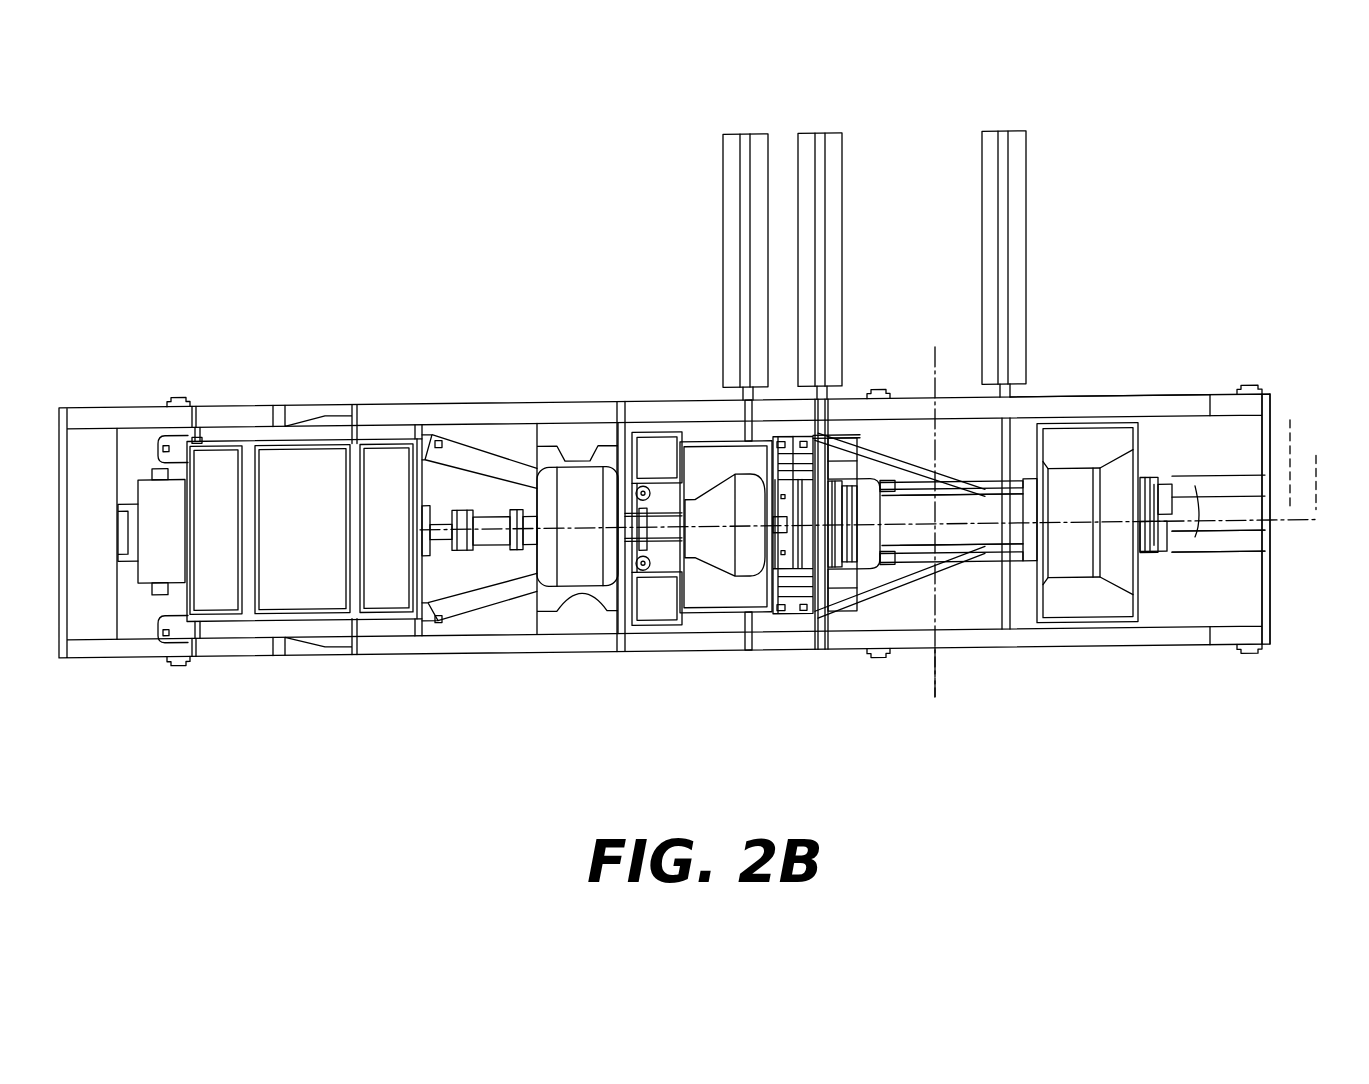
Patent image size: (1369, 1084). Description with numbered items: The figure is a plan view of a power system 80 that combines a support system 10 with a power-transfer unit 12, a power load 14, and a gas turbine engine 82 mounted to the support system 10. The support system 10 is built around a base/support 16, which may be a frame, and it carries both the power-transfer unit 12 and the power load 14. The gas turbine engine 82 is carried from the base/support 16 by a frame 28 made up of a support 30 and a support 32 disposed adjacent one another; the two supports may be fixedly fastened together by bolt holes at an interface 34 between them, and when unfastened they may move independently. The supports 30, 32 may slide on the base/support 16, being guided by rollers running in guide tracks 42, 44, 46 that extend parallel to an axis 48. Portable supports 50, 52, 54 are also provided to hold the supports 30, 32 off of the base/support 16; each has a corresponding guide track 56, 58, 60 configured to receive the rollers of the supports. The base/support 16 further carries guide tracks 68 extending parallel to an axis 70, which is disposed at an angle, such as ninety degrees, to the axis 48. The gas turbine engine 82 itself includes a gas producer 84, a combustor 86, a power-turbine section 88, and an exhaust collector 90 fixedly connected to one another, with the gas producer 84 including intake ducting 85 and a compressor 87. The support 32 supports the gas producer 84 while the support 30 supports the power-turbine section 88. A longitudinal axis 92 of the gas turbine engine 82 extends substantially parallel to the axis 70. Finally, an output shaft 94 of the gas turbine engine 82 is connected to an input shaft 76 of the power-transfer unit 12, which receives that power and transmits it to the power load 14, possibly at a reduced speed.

The support system 10 is at (1071, 348).
The power-transfer unit 12 is at (577, 497).
The power load 14 is at (312, 457).
The base/support 16 is at (513, 650).
The frame 28 is at (799, 633).
The support 30 is at (800, 582).
The support 32 is at (905, 570).
The interface 34 is at (837, 605).
The guide track 42 is at (740, 410).
The guide track 44 is at (833, 408).
The guide track 46 is at (1007, 403).
The axis 48 is at (938, 690).
The portable support 50 is at (727, 162).
The portable support 52 is at (803, 150).
The portable support 54 is at (985, 155).
The guide track 56 is at (743, 145).
The guide track 58 is at (818, 162).
The guide track 60 is at (1002, 182).
The guide tracks 68 is at (1213, 543).
The axis 70 is at (1284, 518).
The input shaft 76 is at (655, 470).
The power system 80 is at (479, 294).
The gas turbine engine 82 is at (917, 432).
The gas producer 84 is at (1003, 537).
The intake ducting 85 is at (1120, 440).
The combustor 86 is at (917, 491).
The compressor 87 is at (942, 470).
The power-turbine section 88 is at (822, 600).
The exhaust collector 90 is at (702, 588).
The longitudinal axis 92 is at (1322, 469).
The output shaft 94 is at (648, 560).